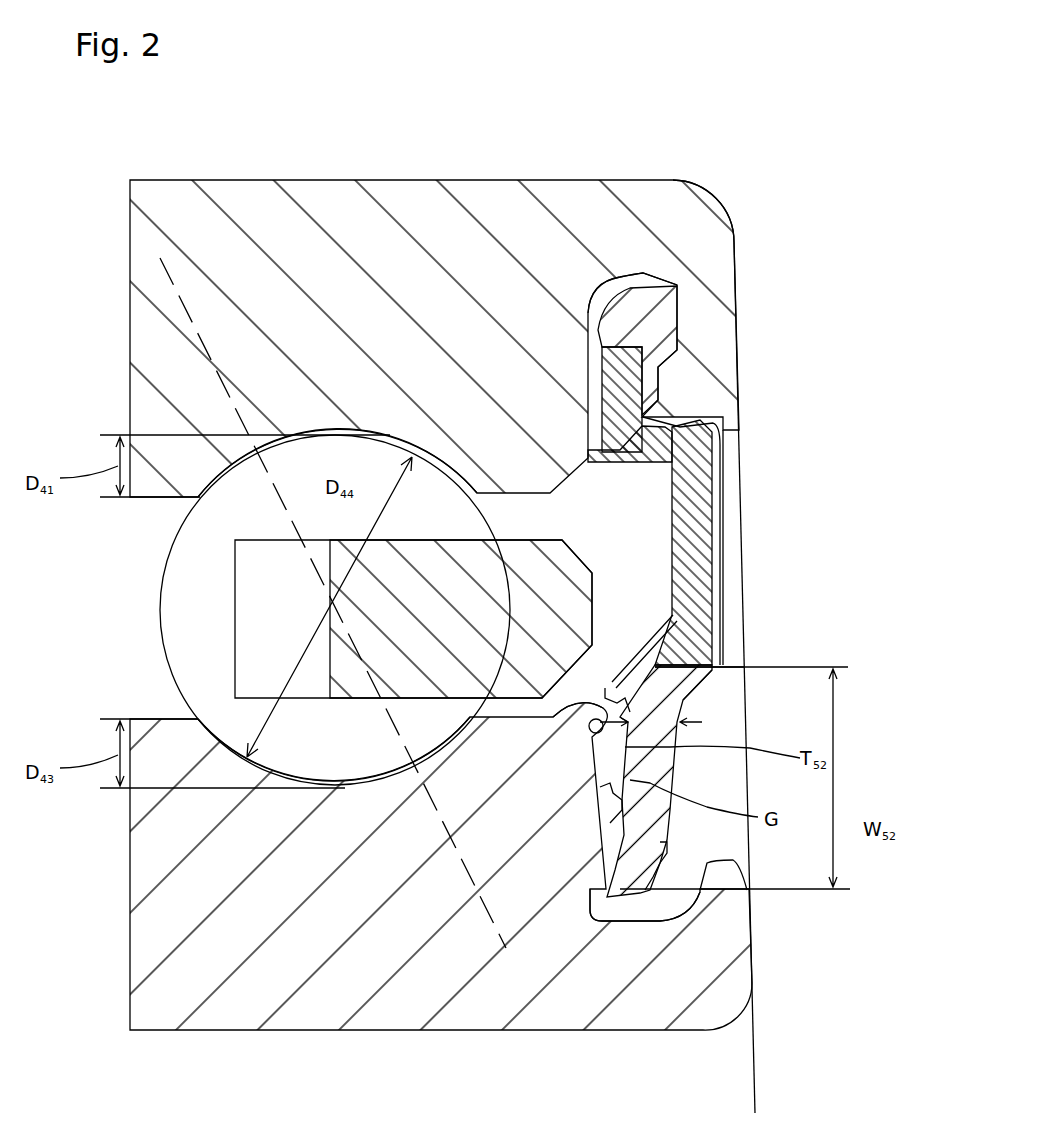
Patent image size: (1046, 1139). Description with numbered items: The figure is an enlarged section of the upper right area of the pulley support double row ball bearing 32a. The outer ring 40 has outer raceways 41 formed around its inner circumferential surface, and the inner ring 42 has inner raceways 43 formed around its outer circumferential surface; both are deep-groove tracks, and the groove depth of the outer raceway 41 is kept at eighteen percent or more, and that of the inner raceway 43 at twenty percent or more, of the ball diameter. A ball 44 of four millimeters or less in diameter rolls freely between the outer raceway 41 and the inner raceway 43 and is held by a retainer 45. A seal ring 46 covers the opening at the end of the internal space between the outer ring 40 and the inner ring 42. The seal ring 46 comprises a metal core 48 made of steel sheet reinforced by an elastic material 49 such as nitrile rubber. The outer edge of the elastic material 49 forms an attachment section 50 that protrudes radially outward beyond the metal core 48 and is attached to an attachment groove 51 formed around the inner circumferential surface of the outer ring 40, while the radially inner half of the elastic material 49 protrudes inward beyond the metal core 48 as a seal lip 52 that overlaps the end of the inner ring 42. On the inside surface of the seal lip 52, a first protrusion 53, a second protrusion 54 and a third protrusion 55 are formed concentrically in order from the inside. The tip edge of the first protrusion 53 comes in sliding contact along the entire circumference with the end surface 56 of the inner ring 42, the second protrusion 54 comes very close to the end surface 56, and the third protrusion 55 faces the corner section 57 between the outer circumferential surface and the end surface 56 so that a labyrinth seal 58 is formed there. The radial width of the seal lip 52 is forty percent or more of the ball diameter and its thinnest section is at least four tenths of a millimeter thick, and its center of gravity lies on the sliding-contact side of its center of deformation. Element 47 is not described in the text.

The pulley support double row ball bearing 32a is at (625, 152).
The outer ring 40 is at (493, 215).
The outer raceway 41 is at (331, 438).
The inner ring 42 is at (290, 963).
The inner raceway 43 is at (386, 790).
The ball 44 is at (185, 580).
The retainer 45 is at (560, 568).
The seal ring 46 is at (690, 540).
The seal lip portion 47 is at (640, 487).
The metal core 48 is at (648, 413).
The elastic material 49 is at (680, 683).
The attachment section 50 is at (663, 327).
The attachment groove 51 is at (642, 283).
The seal lip 52 is at (652, 740).
The first protrusion 53 is at (590, 893).
The second protrusion 54 is at (600, 790).
The third protrusion 55 is at (613, 682).
The end surface 56 is at (640, 810).
The corner section 57 is at (587, 718).
The labyrinth seal 58 is at (583, 726).